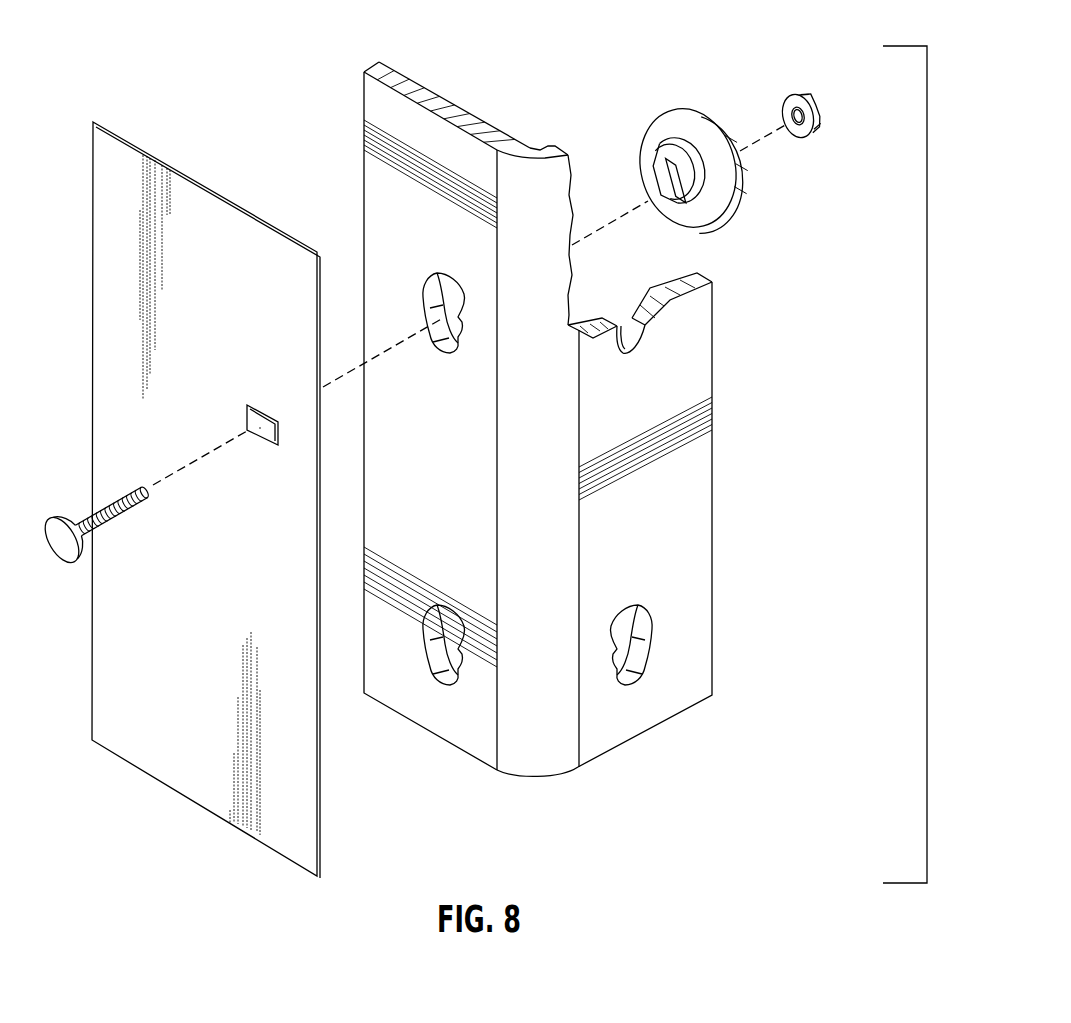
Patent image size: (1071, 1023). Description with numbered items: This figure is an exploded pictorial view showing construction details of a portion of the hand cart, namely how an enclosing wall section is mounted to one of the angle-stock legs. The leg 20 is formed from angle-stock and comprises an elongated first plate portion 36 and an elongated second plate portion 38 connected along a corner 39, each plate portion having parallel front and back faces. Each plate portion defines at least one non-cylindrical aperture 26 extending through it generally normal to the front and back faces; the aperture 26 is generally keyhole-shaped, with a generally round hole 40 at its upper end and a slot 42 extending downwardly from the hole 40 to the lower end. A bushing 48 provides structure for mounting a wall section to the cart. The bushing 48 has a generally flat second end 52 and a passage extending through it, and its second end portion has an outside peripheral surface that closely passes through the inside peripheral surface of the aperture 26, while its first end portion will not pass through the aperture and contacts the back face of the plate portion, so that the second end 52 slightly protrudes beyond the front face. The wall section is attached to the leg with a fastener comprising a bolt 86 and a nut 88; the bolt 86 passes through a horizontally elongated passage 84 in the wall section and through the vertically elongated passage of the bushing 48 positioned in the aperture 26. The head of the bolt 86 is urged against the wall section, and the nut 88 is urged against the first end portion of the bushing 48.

The leg 20 is at (570, 427).
The aperture 26 is at (475, 316).
The first plate portion 36 is at (458, 427).
The second plate portion 38 is at (652, 707).
The corner 39 is at (527, 604).
The round hole 40 is at (431, 316).
The slot 42 is at (443, 347).
The bushing 48 is at (709, 178).
The second end 52 is at (653, 160).
The passage 84 is at (247, 418).
The bolt 86 is at (115, 517).
The nut 88 is at (823, 103).